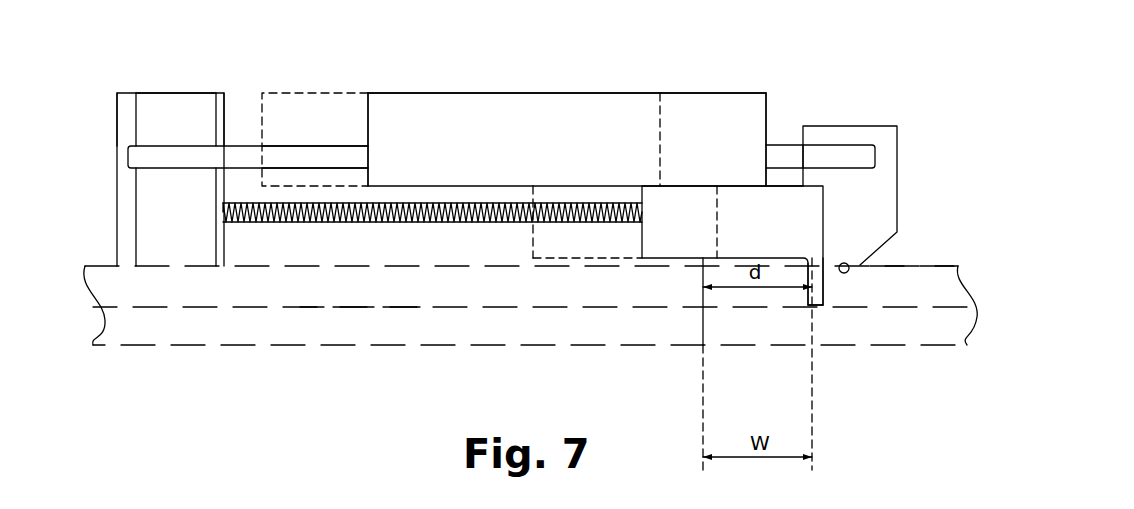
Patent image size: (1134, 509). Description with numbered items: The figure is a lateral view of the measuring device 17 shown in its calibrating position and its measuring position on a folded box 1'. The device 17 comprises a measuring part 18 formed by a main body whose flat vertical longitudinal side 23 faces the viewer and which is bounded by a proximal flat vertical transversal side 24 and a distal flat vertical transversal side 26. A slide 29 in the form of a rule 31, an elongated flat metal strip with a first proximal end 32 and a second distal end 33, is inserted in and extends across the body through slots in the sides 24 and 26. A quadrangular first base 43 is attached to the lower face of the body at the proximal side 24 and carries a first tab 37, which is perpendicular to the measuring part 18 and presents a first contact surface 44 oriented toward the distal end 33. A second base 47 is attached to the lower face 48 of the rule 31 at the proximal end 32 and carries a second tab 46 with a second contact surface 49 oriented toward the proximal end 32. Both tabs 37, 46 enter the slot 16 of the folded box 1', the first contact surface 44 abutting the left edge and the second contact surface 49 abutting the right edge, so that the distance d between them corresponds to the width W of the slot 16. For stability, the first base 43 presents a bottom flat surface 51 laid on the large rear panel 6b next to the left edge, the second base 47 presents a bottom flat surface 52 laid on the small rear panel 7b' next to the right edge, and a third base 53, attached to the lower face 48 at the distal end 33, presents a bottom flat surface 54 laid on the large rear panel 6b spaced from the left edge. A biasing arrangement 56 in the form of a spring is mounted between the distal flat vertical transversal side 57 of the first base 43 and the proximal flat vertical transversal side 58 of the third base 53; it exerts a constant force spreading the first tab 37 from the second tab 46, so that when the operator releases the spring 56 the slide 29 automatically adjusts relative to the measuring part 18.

The folded box 1' is at (530, 344).
The small rear panel 7b' is at (914, 340).
The large rear panel 6b is at (383, 290).
The bottom flat surface 54 is at (177, 266).
The third base 53 is at (174, 91).
The proximal flat vertical transversal side 58 is at (225, 120).
The measuring device 17 is at (123, 86).
The second distal end 33 is at (132, 157).
The rule 31 is at (275, 155).
The slide 29 is at (247, 172).
The flat vertical longitudinal side 23 is at (448, 110).
The measuring part 18 is at (523, 88).
The distal flat vertical transversal side 26 is at (368, 127).
The proximal flat vertical transversal side 24 is at (768, 105).
The biasing arrangement 56 is at (323, 225).
The distal flat vertical transversal side 57 is at (640, 250).
The bottom flat surface 51 is at (658, 258).
The first contact surface 44 is at (700, 277).
The slot 16 is at (757, 298).
The second tab 46 is at (807, 307).
The first tab 37 is at (822, 310).
The second contact surface 49 is at (813, 298).
The second base 47 is at (882, 126).
The first base 43 is at (783, 186).
The first proximal end 32 is at (877, 155).
The lower face 48 is at (840, 172).
The bottom flat surface 52 is at (842, 266).